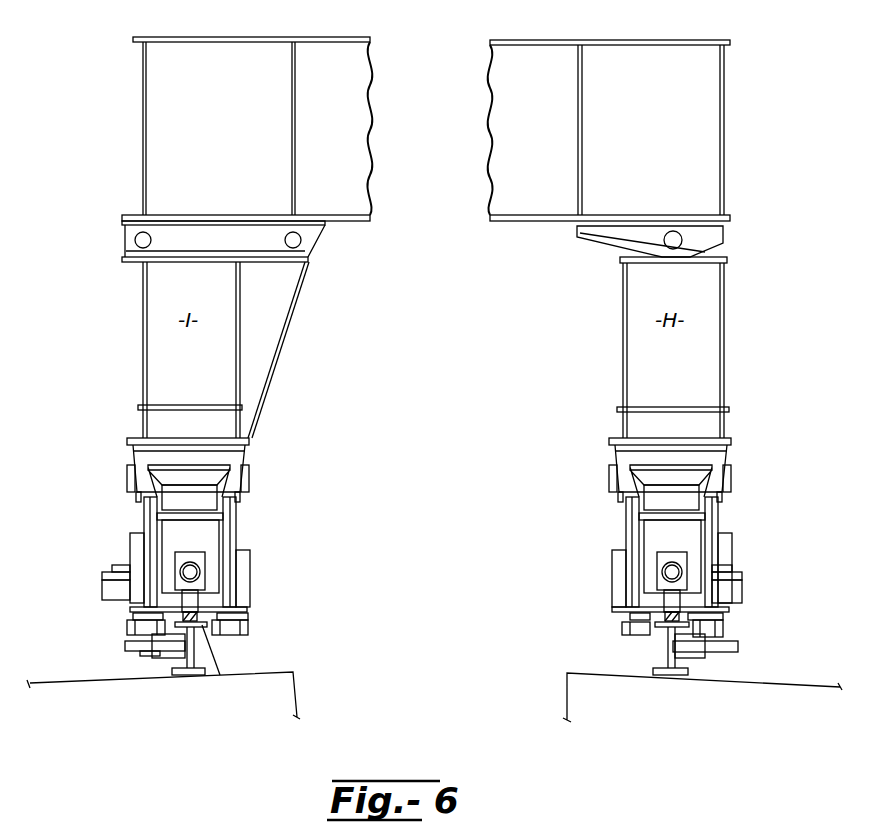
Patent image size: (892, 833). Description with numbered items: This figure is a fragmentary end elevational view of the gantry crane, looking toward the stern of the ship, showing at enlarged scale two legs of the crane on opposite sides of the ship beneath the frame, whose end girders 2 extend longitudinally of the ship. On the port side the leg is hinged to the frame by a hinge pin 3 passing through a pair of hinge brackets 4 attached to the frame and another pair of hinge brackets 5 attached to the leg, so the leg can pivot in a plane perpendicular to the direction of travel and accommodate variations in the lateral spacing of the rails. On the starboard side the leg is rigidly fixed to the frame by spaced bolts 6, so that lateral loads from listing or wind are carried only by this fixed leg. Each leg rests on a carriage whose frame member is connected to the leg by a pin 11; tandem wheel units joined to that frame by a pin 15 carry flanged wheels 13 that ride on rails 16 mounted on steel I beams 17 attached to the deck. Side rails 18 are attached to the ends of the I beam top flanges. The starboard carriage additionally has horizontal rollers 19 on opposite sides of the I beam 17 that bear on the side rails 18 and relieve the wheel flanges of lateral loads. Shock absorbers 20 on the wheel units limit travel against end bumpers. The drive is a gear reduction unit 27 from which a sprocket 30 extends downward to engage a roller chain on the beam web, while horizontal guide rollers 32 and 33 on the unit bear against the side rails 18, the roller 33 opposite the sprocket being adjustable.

The end girder 2 is at (318, 38).
The hinge pin 3 is at (683, 240).
The hinge brackets 4 is at (581, 233).
The hinge brackets 5 is at (612, 247).
The bolts 6 is at (135, 240).
The pin 11 is at (250, 481).
The flanged wheels 13 is at (199, 606).
The pin 15 is at (238, 521).
The rails 16 is at (431, 635).
The steel I beam 17 is at (195, 660).
The side rails 18 is at (133, 615).
The horizontal rollers 19 is at (127, 628).
The shock absorbers 20 is at (199, 566).
The gear reduction unit 27 is at (102, 588).
The sprocket 30 is at (125, 646).
The horizontal guide roller 32 is at (723, 628).
The horizontal guide roller 33 is at (622, 630).